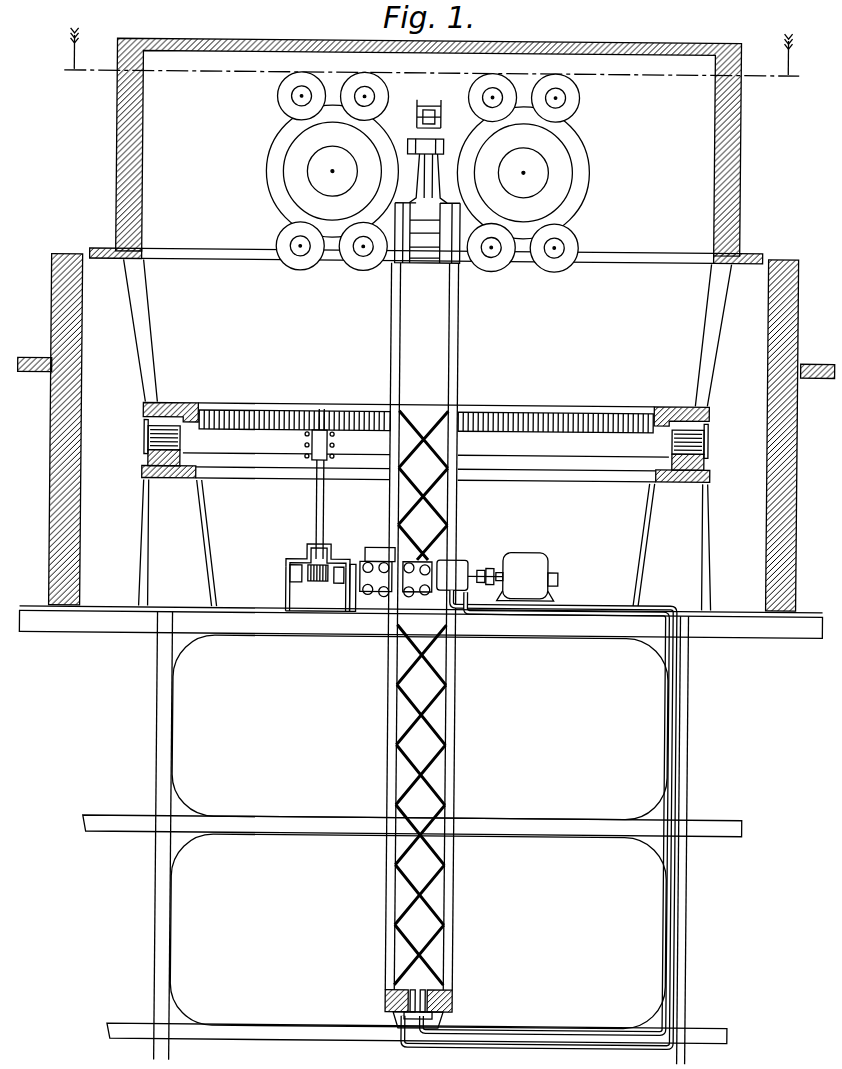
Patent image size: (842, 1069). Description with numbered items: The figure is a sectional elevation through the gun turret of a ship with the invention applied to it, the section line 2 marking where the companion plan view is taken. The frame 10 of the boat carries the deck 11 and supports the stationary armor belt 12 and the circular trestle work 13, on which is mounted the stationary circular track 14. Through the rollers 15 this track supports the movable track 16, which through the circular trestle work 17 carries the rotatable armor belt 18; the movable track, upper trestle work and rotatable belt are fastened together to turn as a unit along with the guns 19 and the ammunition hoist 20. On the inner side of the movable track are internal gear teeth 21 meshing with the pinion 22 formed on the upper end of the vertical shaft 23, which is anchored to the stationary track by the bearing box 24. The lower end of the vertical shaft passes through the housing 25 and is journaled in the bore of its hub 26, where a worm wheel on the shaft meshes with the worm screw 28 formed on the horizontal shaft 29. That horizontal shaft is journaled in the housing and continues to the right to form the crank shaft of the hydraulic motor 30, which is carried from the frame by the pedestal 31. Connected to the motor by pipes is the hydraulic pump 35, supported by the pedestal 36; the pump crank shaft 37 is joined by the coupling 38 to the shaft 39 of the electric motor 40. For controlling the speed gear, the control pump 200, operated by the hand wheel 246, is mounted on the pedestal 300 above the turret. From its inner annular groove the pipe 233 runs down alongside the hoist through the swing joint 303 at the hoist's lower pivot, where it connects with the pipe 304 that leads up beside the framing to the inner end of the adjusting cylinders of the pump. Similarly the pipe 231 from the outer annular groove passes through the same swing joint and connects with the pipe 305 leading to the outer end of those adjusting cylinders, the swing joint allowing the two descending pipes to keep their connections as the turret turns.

The section line 2— 2 is at (432, 65).
The frame 10 is at (157, 736).
The deck 11 is at (31, 359).
The stationary armor belt 12 is at (49, 464).
The circular trestle work 13 is at (140, 569).
The stationary circular track 14 is at (141, 473).
The rollers 15 is at (146, 439).
The movable track 16 is at (142, 409).
The circular trestle work 17 is at (134, 336).
The rotatable armor belt 18 is at (121, 166).
The guns 19 is at (276, 154).
The ammunition hoist 20 is at (458, 513).
The internal gear teeth 21 is at (247, 423).
The pinion 22 is at (320, 410).
The vertical shaft 23 is at (316, 503).
The bearing box 24 is at (327, 448).
The housing 25 is at (286, 585).
The hub 26 is at (307, 548).
The worm screw 28 is at (310, 585).
The horizontal shaft 29 is at (340, 586).
The hydraulic motor 30 is at (378, 556).
The pedestal 31 is at (363, 590).
The hydraulic pump 35 is at (432, 561).
The pedestal 36 is at (469, 590).
The pump crank shaft 37 is at (480, 569).
The coupling 38 is at (491, 567).
The shaft 39 is at (501, 571).
The electric motor 40 is at (540, 559).
The control pump 200 is at (443, 140).
The pipe 231 is at (389, 329).
The pipe 233 is at (457, 326).
The hand wheel 246 is at (413, 119).
The pedestal 300 is at (421, 172).
The swing joint 303 is at (452, 1016).
The pipe 304 is at (447, 599).
The pipe 305 is at (558, 606).